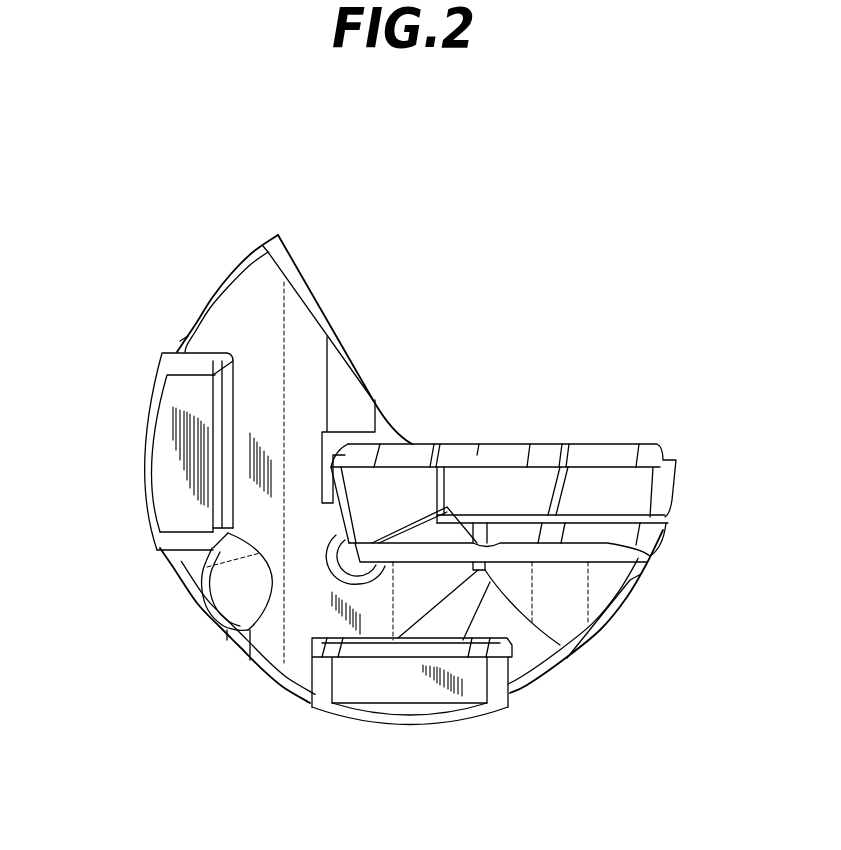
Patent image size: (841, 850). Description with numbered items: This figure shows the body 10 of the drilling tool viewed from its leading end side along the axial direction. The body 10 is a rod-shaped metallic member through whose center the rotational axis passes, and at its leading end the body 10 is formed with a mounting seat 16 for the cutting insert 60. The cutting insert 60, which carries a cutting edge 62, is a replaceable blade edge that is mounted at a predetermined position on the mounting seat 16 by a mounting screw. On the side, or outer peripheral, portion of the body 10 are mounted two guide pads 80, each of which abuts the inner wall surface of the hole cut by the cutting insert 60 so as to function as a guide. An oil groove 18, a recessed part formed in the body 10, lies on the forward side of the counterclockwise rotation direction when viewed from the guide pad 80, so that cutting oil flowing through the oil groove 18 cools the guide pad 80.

The body 10 is at (232, 323).
The mounting seat 16 is at (672, 563).
The oil groove 18 is at (233, 594).
The cutting insert 60 is at (635, 486).
The cutting edge 62 is at (583, 425).
The guide pad 80 is at (165, 464).